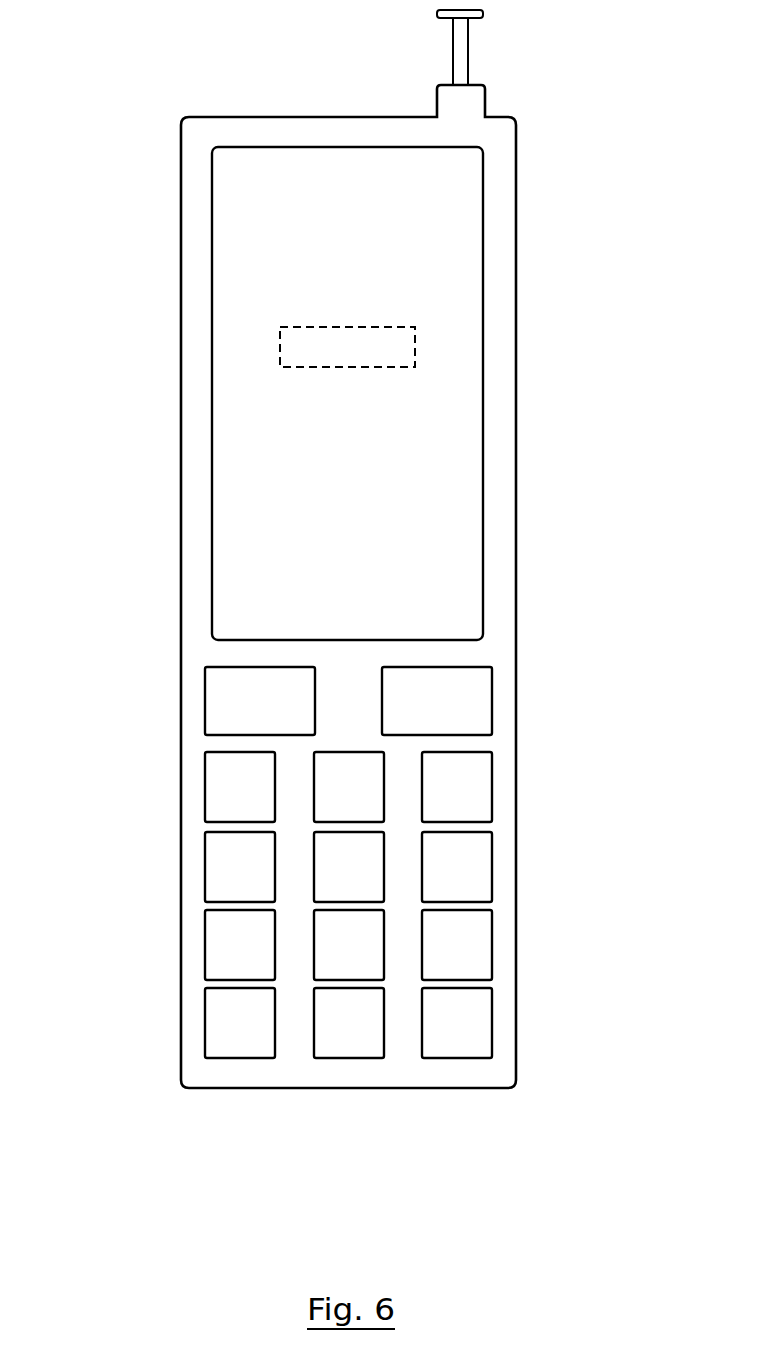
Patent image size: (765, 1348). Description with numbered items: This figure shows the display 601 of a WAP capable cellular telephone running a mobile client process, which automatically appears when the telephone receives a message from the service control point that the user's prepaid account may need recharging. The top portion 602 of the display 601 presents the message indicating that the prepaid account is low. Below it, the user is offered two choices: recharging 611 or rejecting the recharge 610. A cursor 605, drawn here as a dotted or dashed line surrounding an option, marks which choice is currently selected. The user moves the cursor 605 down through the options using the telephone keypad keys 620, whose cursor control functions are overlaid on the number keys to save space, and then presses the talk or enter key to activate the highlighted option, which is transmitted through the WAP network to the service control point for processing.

The display 601 is at (455, 275).
The top portion 602 is at (432, 176).
The cursor 605 is at (280, 350).
The recharging option 611 is at (415, 350).
The reject recharge option 610 is at (452, 448).
The telephone keypad keys 620 is at (498, 903).